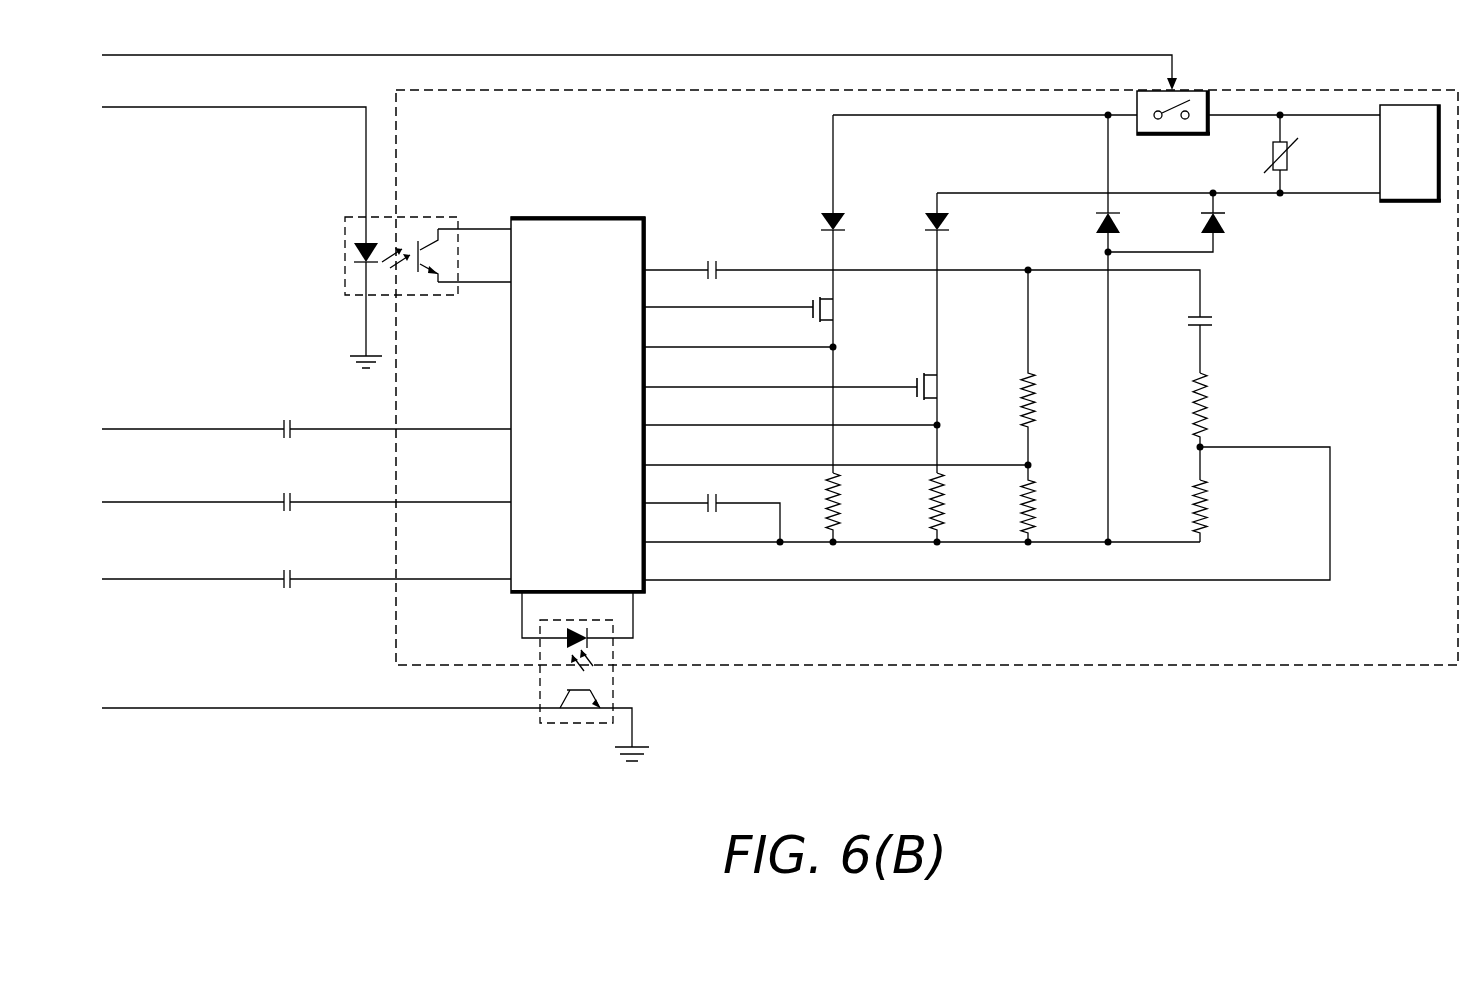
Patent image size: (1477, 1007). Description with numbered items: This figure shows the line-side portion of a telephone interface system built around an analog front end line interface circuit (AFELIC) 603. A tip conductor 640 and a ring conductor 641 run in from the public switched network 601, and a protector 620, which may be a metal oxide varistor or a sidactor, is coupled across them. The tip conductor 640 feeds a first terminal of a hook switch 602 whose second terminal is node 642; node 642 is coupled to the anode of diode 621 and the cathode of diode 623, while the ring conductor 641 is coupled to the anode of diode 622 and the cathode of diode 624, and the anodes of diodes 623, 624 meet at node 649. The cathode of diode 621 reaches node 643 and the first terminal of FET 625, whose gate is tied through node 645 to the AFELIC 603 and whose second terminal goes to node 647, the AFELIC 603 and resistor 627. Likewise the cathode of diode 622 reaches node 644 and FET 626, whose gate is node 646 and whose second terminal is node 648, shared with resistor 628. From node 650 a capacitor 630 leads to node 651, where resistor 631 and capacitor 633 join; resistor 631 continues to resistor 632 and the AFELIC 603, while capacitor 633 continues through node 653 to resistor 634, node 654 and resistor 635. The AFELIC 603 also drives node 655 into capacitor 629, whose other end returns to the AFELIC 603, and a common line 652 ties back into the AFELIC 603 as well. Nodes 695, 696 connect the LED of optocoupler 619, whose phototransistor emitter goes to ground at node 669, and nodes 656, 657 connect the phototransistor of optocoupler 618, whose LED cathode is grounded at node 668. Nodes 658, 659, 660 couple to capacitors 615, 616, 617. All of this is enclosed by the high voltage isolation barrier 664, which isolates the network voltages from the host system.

The public switched network 601 is at (1410, 202).
The hook switch 602 is at (1165, 135).
The analog front end line interface circuit (AFELIC) 603 is at (600, 217).
The capacitor 615 is at (282, 422).
The capacitor 616 is at (282, 495).
The capacitor 617 is at (282, 572).
The optocoupler 618 is at (455, 217).
The optocoupler 619 is at (613, 690).
The protector 620 is at (1273, 156).
The diode 621 is at (821, 220).
The diode 622 is at (947, 225).
The diode 623 is at (1100, 223).
The diode 624 is at (1205, 223).
The field effect transistor (FET) 625 is at (824, 310).
The field effect transistor (FET) 626 is at (928, 386).
The resistor 627 is at (838, 506).
The resistor 628 is at (942, 506).
The capacitor 629 is at (716, 503).
The capacitor 630 is at (716, 270).
The resistor 631 is at (1032, 386).
The resistor 632 is at (1035, 511).
The capacitor 633 is at (1210, 326).
The resistor 634 is at (1207, 406).
The resistor 635 is at (1207, 511).
The tip conductor 640 is at (1325, 115).
The ring conductor 641 is at (1318, 195).
The node 642 is at (833, 160).
The node 643 is at (833, 262).
The node 644 is at (940, 318).
The node 645 is at (728, 307).
The node 646 is at (700, 387).
The node 647 is at (835, 372).
The node 648 is at (730, 425).
The node 649 is at (1106, 326).
The node 650 is at (665, 270).
The node 651 is at (1200, 290).
The line 652 is at (760, 465).
The node 653 is at (1198, 342).
The node 654 is at (770, 580).
The node 655 is at (665, 503).
The node 656 is at (487, 229).
The node 657 is at (487, 282).
The node 658 is at (470, 429).
The node 659 is at (420, 502).
The node 660 is at (450, 579).
The high voltage isolation barrier 664 is at (484, 90).
The node 668 is at (366, 330).
The node 669 is at (632, 736).
The node 695 is at (522, 620).
The node 696 is at (633, 620).